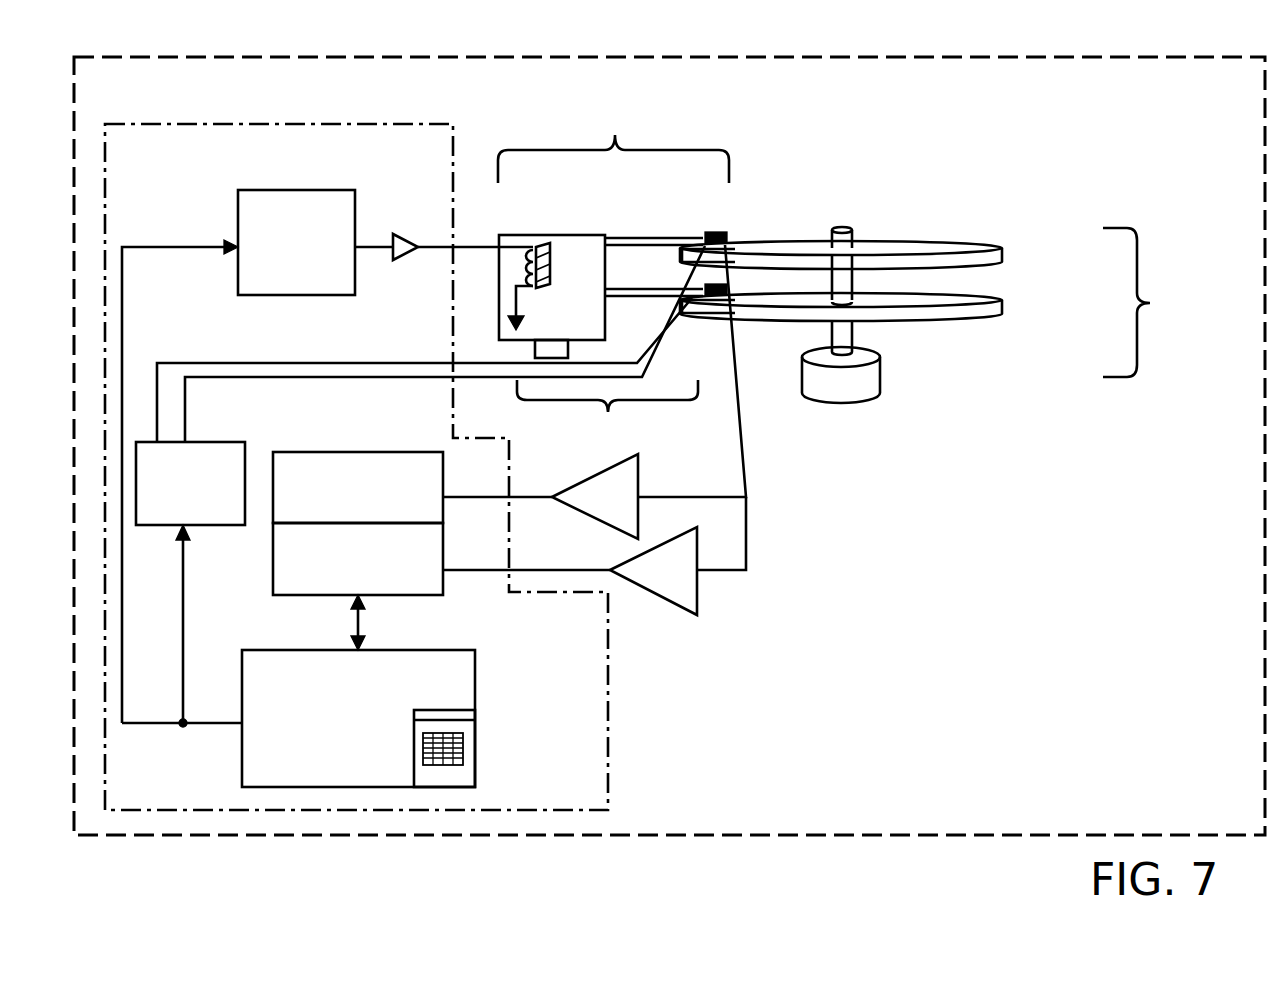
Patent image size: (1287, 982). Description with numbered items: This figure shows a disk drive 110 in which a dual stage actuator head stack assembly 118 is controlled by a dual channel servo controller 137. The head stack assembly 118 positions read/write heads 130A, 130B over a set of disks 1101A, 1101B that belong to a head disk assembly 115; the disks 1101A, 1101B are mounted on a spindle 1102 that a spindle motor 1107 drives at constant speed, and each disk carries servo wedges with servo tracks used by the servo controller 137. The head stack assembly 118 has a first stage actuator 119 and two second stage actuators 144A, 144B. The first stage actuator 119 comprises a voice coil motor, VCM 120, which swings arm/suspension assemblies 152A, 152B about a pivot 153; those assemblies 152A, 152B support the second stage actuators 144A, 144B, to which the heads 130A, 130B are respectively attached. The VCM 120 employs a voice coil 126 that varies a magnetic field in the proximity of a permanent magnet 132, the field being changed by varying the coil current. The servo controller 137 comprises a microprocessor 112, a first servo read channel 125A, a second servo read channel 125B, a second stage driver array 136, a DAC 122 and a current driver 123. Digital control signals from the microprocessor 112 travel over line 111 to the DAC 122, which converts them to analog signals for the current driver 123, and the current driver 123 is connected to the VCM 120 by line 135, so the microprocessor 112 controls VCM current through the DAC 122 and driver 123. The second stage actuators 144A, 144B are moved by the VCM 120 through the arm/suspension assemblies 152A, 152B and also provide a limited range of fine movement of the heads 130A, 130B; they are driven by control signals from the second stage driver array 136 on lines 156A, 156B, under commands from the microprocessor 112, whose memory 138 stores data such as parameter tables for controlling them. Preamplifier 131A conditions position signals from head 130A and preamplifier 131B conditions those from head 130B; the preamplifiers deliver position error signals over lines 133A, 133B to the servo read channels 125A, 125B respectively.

The disk drive 110 is at (381, 838).
The line 111 is at (168, 246).
The microprocessor 112 is at (476, 697).
The head disk assembly 115 is at (1148, 302).
The dual stage actuator head stack assembly 118 is at (613, 146).
The first stage actuator 119 is at (607, 414).
The voice coil motor (VCM) 120 is at (566, 235).
The digital to analog converter (DAC) 122 is at (297, 190).
The current driver 123 is at (410, 255).
The first servo read channel 125A is at (386, 452).
The second servo read channel 125B is at (416, 596).
The voice coil 126 is at (520, 274).
The read/write head 130A is at (738, 250).
The read/write head 130B is at (738, 300).
The preamplifier 131A is at (554, 494).
The preamplifier 131B is at (655, 597).
The permanent magnet 132 is at (540, 244).
The read signal line 133A is at (688, 496).
The read signal line 133B is at (732, 572).
The line 135 is at (470, 244).
The second stage driver array 136 is at (226, 442).
The dual channel servo controller 137 is at (608, 728).
The memory 138 is at (463, 760).
The second stage actuator 144A is at (712, 232).
The second stage actuator 144B is at (706, 298).
The arm/suspension assembly 152A is at (672, 222).
The arm/suspension assembly 152B is at (632, 297).
The pivot 153 is at (535, 350).
The line 156A is at (258, 363).
The line 156B is at (300, 378).
The disk 1101A is at (1004, 252).
The disk 1101B is at (1004, 308).
The spindle 1102 is at (843, 230).
The spindle motor 1107 is at (881, 376).